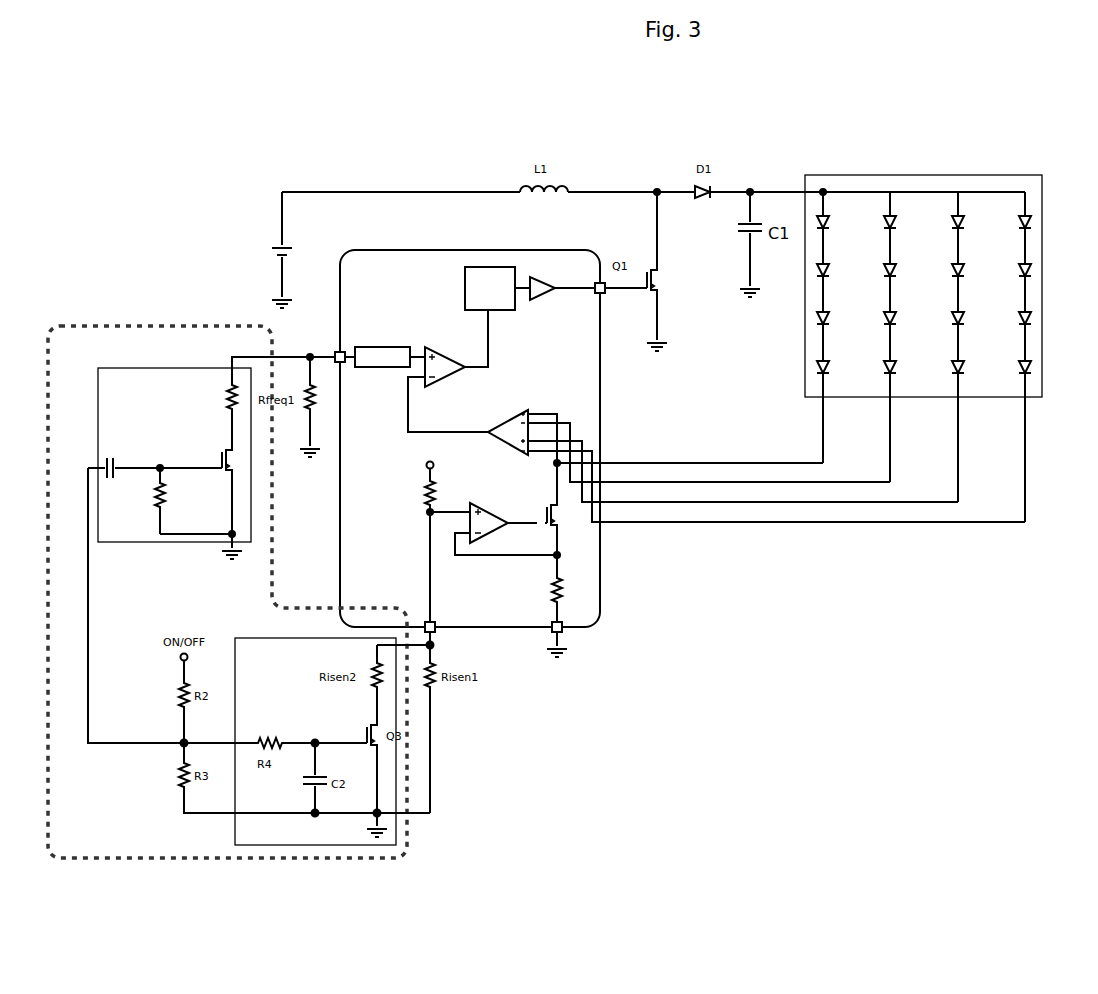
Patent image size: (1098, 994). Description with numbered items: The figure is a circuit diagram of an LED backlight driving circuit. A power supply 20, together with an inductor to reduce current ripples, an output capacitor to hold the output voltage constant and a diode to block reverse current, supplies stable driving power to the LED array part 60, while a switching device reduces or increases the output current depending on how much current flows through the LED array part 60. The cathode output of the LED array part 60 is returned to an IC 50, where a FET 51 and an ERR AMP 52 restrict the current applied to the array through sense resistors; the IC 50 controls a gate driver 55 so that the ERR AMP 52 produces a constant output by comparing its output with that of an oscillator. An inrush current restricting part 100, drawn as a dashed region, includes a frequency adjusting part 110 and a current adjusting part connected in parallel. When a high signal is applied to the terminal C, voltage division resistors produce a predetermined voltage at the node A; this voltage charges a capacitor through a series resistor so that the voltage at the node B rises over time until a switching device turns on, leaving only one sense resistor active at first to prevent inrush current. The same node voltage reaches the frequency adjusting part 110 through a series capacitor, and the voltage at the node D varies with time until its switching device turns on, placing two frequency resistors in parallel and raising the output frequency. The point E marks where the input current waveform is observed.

The power supply 20 is at (272, 243).
The IC 50 is at (504, 454).
The FET 51 is at (560, 519).
The ERR AMP 52 is at (505, 450).
The gate driver 55 is at (465, 290).
The LED array part 60 is at (805, 375).
The inrush current restricting part 100 is at (108, 325).
The frequency adjusting part 110 is at (175, 418).
The node A is at (181, 748).
The node B is at (315, 740).
The terminal C is at (181, 660).
The node D is at (162, 460).
The point E is at (612, 194).